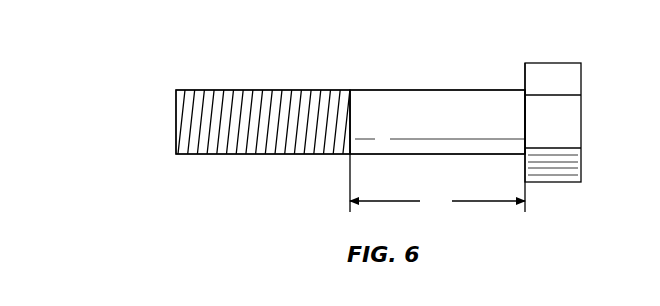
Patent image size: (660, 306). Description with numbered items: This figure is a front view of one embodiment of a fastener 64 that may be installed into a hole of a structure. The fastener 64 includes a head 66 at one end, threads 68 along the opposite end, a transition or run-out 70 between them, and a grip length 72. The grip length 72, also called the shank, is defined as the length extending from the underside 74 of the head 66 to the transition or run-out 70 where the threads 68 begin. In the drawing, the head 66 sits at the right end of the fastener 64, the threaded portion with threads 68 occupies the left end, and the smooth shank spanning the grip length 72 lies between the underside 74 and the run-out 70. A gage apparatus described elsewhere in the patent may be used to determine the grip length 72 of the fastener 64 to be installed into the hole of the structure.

The fastener 64 is at (444, 36).
The head 66 is at (581, 80).
The threads 68 is at (232, 155).
The transition or run-out 70 is at (350, 108).
The grip length 72 is at (437, 183).
The underside of the head 74 is at (525, 80).